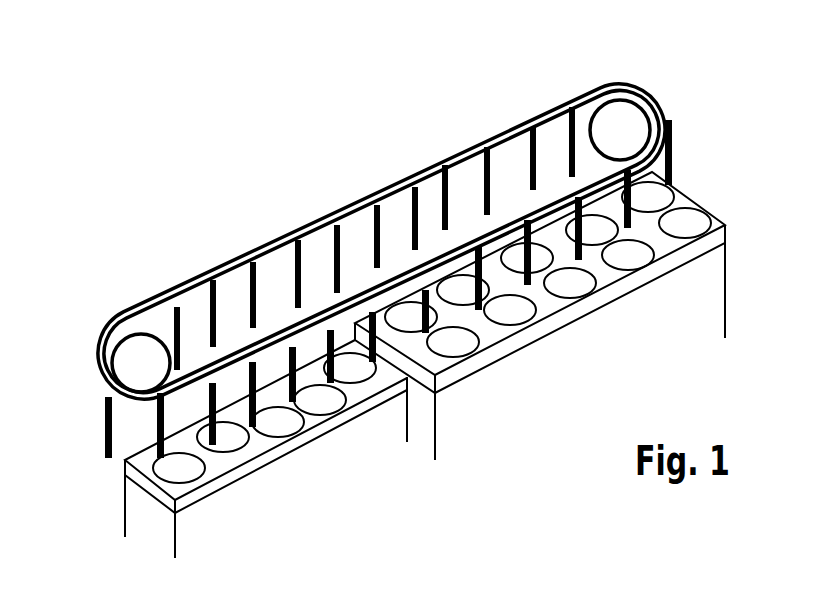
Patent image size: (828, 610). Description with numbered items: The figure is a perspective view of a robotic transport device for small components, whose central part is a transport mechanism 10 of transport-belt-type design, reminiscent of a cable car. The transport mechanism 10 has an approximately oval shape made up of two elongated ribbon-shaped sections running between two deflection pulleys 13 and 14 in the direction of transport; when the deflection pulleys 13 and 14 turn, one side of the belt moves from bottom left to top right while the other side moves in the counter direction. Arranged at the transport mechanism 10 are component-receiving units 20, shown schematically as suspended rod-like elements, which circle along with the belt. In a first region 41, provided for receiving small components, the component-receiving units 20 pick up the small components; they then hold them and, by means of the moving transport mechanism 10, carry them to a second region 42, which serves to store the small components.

The transport mechanism 10 is at (259, 209).
The deflection pulley 13 is at (122, 367).
The deflection pulley 14 is at (618, 125).
The component-receiving units 20 is at (670, 187).
The first region 41 is at (290, 457).
The second region 42 is at (573, 327).